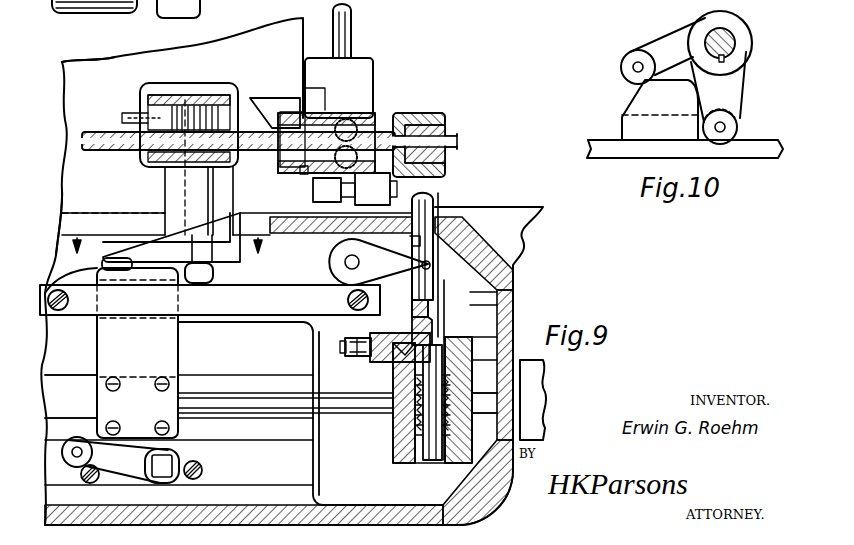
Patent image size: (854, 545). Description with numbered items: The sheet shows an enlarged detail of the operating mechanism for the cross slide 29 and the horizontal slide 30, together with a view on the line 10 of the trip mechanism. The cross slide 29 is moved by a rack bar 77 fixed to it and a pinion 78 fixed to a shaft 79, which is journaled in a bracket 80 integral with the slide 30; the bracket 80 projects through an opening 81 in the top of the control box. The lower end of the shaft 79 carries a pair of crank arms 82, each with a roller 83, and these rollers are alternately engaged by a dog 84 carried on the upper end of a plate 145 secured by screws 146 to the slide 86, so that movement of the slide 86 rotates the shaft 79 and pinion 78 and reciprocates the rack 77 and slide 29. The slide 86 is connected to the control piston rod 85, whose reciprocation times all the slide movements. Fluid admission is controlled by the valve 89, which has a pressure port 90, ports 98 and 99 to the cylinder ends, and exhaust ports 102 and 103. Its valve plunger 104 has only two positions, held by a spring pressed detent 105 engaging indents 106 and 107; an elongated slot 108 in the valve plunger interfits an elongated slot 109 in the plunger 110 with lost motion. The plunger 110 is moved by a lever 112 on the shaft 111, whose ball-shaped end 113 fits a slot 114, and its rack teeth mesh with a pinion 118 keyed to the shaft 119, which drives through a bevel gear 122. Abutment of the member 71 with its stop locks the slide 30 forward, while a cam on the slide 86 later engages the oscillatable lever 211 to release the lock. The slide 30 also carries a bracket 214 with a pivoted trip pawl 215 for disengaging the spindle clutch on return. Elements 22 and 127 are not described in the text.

In FIG. 9, the section line 10 is at (167, 258).
In FIG. 9, the adjusting nut 22 is at (396, 188).
In FIG. 9, the cross slide 29 is at (80, 62).
In FIG. 9, the horizontal slide 30 is at (72, 196).
In FIG. 9, the member 71 is at (316, 200).
In FIG. 9, the rack bar 77 is at (156, 110).
In FIG. 9, the pinion 78 is at (238, 92).
In FIG. 10, the shaft 79 is at (722, 35).
In FIG. 9, the bracket 80 is at (175, 186).
In FIG. 9, the opening 81 is at (262, 210).
In FIG. 9, the crank arms 82 is at (128, 252).
In FIG. 10, the crank arms 82 is at (663, 36).
In FIG. 9, the roller 83 is at (214, 282).
In FIG. 10, the roller 83 is at (625, 58).
In FIG. 9, the dog 84 is at (55, 268).
In FIG. 10, the dog 84 is at (640, 97).
In FIG. 9, the control piston rod 85 is at (335, 395).
In FIG. 9, the slide 86 is at (70, 392).
In FIG. 9, the valve 89 is at (480, 348).
In FIG. 9, the pressure port 90 is at (470, 402).
In FIG. 9, the port 98 is at (460, 385).
In FIG. 9, the port 99 is at (412, 410).
In FIG. 9, the exhaust port 102 is at (470, 362).
In FIG. 9, the exhaust port 103 is at (405, 432).
In FIG. 9, the valve plunger 104 is at (475, 302).
In FIG. 9, the spring pressed detent 105 is at (380, 362).
In FIG. 9, the indent 106 is at (436, 338).
In FIG. 9, the indent 107 is at (440, 318).
In FIG. 9, the elongated slot 108 is at (480, 290).
In FIG. 9, the elongated slot 109 is at (414, 306).
In FIG. 9, the plunger 110 is at (440, 202).
In FIG. 9, the shaft 111 is at (345, 264).
In FIG. 9, the lever 112 is at (346, 248).
In FIG. 9, the ball-shaped end 113 is at (432, 266).
In FIG. 9, the slot 114 is at (412, 238).
In FIG. 9, the pinion 118 is at (422, 115).
In FIG. 9, the shaft 119 is at (114, 150).
In FIG. 9, the bevel gear 122 is at (372, 90).
In FIG. 9, the rod 127 is at (352, 18).
In FIG. 9, the plate 145 is at (165, 347).
In FIG. 9, the screws 146 is at (165, 372).
In FIG. 9, the oscillatable lever 211 is at (120, 466).
In FIG. 9, the bracket 214 is at (157, 5).
In FIG. 9, the trip pawl 215 is at (228, 0).